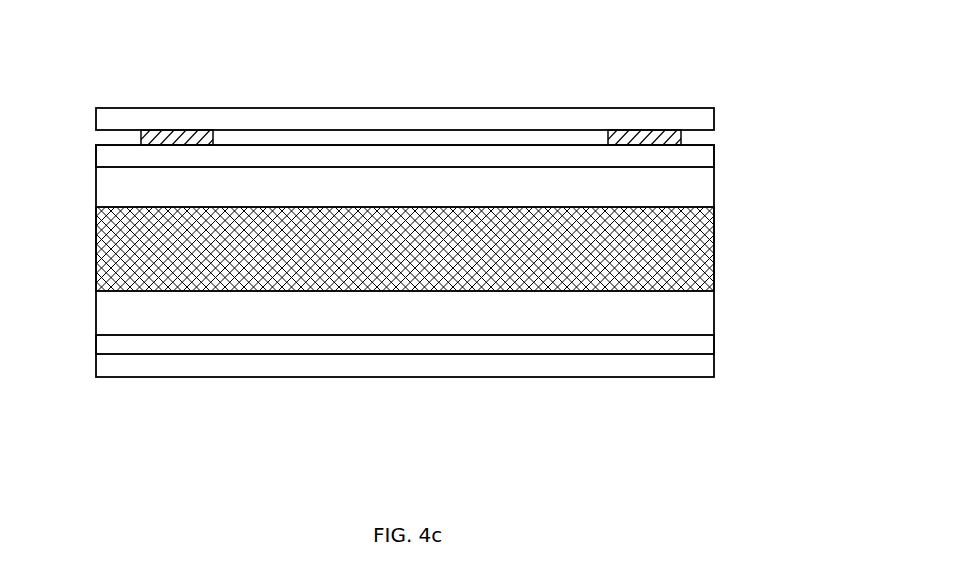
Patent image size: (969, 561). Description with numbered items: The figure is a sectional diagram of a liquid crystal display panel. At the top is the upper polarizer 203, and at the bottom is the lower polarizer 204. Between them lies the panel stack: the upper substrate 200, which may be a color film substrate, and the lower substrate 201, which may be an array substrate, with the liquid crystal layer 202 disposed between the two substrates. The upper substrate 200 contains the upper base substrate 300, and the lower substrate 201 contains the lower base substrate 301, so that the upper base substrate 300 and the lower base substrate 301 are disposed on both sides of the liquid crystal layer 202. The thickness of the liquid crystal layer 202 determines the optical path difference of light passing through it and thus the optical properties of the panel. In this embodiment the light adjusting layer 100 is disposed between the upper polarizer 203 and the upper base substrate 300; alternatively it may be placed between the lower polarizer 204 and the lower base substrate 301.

The light adjusting layer 100 is at (188, 138).
The upper substrate 200 is at (92, 145).
The lower substrate 201 is at (92, 293).
The liquid crystal layer 202 is at (698, 244).
The upper polarizer 203 is at (408, 122).
The lower polarizer 204 is at (373, 363).
The upper base substrate 300 is at (702, 155).
The lower base substrate 301 is at (697, 343).